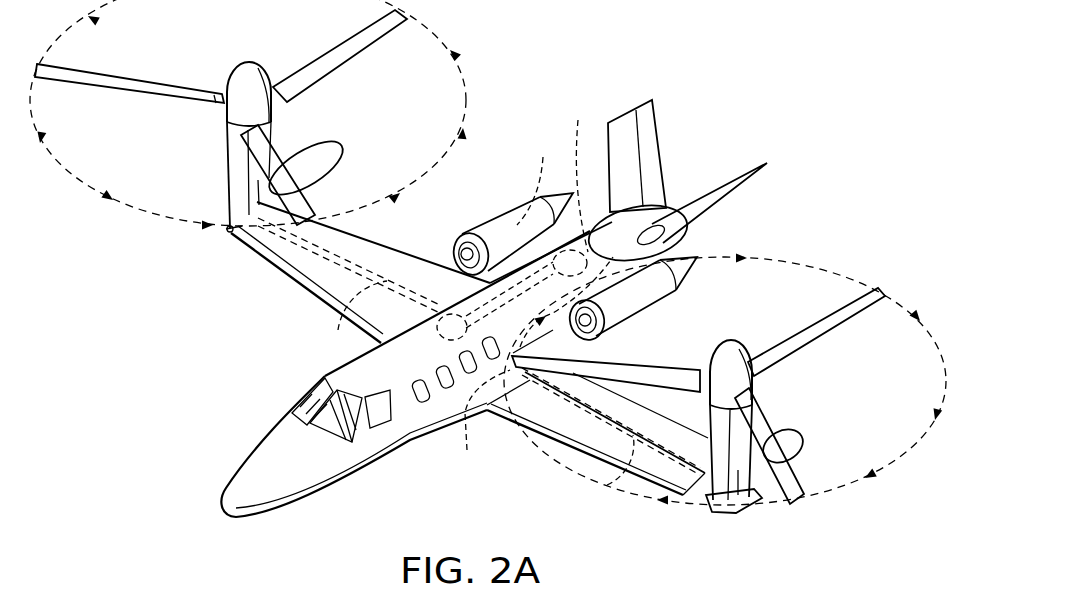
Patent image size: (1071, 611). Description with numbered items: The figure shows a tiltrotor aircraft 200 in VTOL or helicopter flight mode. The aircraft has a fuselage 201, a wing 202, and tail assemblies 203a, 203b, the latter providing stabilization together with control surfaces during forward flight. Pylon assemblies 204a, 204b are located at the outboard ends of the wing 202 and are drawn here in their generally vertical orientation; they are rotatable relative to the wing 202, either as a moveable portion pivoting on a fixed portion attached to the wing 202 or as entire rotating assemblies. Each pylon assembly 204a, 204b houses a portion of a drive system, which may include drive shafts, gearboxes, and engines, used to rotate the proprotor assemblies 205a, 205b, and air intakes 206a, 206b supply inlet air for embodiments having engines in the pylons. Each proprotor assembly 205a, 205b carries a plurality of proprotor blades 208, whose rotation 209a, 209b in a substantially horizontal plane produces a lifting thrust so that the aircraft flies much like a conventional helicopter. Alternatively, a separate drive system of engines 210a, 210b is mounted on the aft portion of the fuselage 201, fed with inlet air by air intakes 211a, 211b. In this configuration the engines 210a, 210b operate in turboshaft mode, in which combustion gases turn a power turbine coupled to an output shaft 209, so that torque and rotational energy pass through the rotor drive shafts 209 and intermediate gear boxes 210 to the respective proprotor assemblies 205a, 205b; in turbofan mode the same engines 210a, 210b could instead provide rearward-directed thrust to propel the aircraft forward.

The tiltrotor aircraft 200 is at (720, 78).
The fuselage 201 is at (307, 474).
The wing 202 is at (297, 275).
The tail assembly 203a is at (657, 140).
The tail assembly 203b is at (727, 190).
The pylon assembly 204a is at (227, 150).
The pylon assembly 204b is at (795, 433).
The proprotor assembly 205a is at (211, 57).
The proprotor assembly 205b is at (765, 388).
The air intake 206a is at (229, 233).
The air intake 206b is at (718, 511).
The proprotor blades 208 is at (325, 60).
The rotor drive shaft 209 is at (338, 330).
The rotation of proprotor blades 209a is at (468, 90).
The rotation of proprotor blades 209b is at (810, 267).
The intermediate gear box 210 is at (410, 367).
The engine 210a is at (511, 213).
The engine 210b is at (650, 288).
The air intake 211a is at (452, 256).
The air intake 211b is at (592, 340).